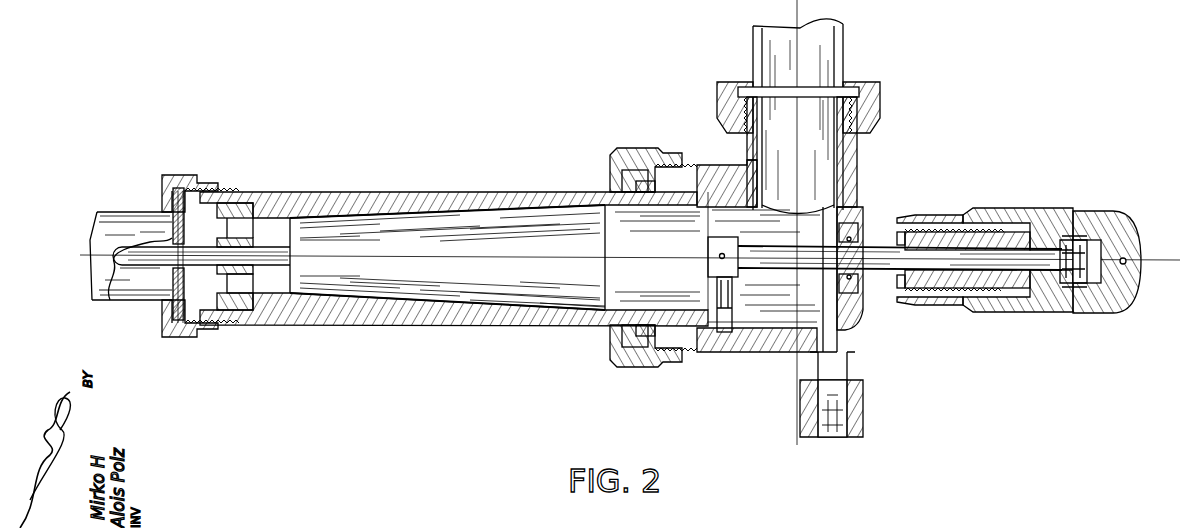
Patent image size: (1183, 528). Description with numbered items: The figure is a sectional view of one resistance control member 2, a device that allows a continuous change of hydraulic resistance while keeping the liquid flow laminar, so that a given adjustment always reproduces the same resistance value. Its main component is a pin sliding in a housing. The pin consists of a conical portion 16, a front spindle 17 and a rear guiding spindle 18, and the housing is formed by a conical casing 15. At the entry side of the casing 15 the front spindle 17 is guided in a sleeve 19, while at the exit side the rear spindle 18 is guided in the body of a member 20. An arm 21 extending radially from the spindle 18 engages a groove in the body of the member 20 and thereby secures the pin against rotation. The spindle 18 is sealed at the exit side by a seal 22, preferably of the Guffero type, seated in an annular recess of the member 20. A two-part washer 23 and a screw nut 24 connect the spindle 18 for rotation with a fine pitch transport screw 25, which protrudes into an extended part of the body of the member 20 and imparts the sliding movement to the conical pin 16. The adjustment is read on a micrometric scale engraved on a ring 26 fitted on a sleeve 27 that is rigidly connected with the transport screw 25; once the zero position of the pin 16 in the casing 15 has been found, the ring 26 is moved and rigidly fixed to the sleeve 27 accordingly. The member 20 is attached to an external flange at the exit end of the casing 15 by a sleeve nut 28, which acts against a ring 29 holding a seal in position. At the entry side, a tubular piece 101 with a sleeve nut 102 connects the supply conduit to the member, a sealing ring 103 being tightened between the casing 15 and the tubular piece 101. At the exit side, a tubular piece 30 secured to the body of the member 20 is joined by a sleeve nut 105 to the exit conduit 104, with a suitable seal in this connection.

The resistance control member 2 is at (566, 150).
The conical casing 15 is at (350, 201).
The conical portion 16 is at (500, 259).
The front spindle 17 is at (178, 257).
The rear guiding spindle 18 is at (794, 258).
The sleeve 19 is at (243, 300).
The member 20 is at (712, 172).
The arm 21 is at (722, 316).
The seal 22 is at (863, 300).
The washer 23 is at (1078, 296).
The screw nut 24 is at (1113, 214).
The fine pitch transport screw 25 is at (976, 280).
The ring 26 is at (928, 214).
The sleeve 27 is at (1020, 209).
The sleeve nut 28 is at (613, 357).
The ring 29 is at (613, 328).
The tubular piece 30 is at (842, 147).
The tubular piece 101 is at (112, 211).
The sleeve nut 102 is at (184, 168).
The sealing ring 103 is at (170, 312).
The conduit 104 is at (844, 61).
The sleeve nut 105 is at (881, 106).